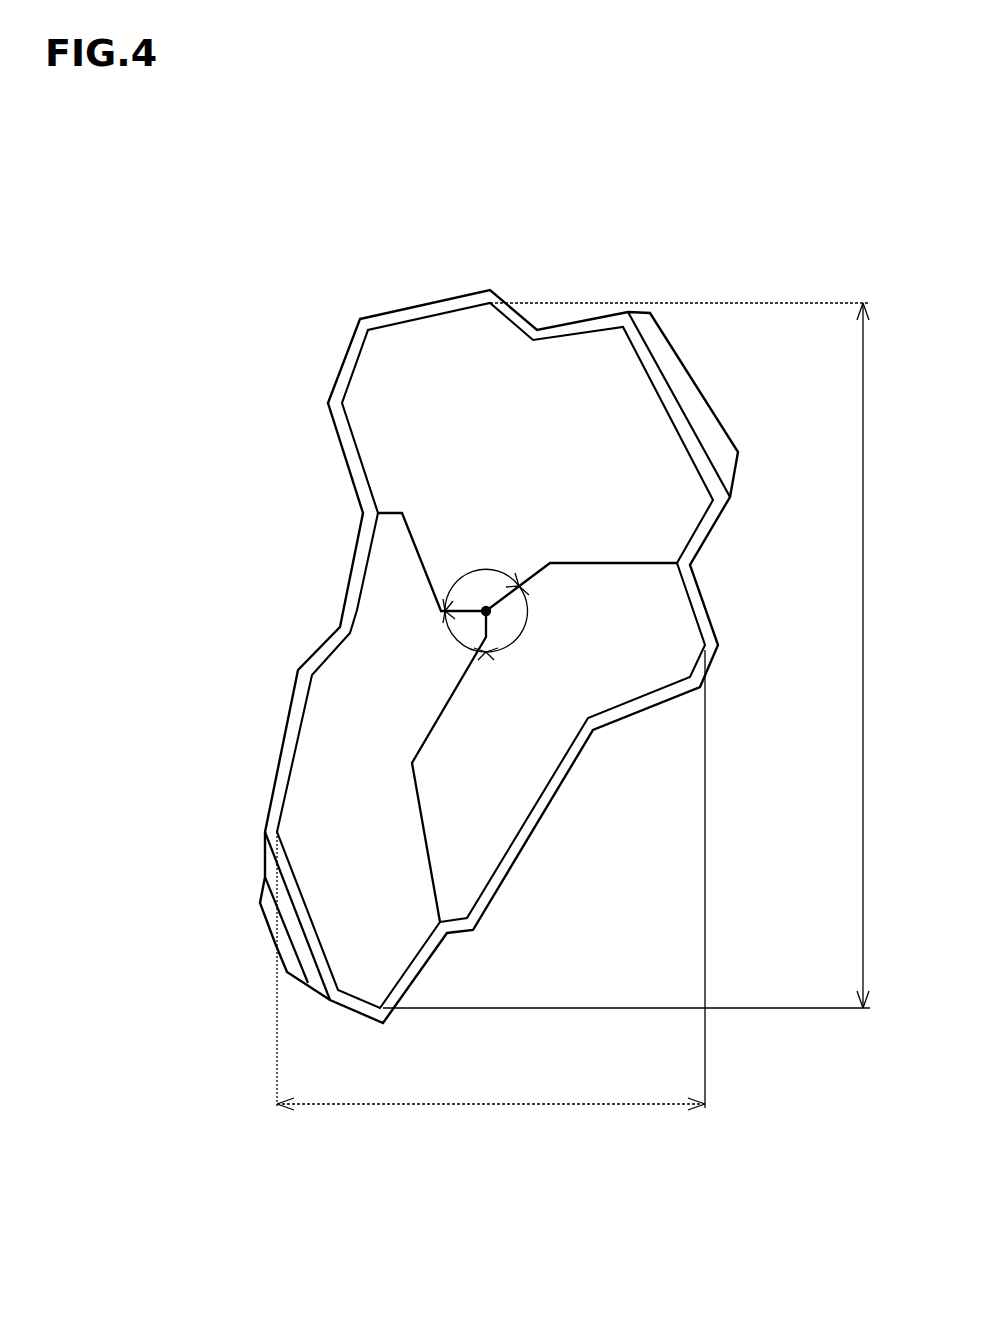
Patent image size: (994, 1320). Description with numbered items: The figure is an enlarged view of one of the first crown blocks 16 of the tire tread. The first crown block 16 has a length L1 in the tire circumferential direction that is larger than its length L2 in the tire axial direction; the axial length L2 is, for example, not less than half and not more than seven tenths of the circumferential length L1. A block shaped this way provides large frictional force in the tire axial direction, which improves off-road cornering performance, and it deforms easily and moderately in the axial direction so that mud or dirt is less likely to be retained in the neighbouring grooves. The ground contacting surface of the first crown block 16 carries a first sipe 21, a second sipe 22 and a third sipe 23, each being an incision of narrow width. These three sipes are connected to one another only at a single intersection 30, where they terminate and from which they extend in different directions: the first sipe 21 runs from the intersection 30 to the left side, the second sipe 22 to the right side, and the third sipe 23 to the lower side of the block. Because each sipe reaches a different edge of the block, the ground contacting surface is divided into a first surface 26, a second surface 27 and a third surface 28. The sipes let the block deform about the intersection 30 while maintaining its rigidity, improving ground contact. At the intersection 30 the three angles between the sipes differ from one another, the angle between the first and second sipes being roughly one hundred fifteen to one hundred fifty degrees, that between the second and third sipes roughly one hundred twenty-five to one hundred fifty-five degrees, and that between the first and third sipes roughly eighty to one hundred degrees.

The first crown block 16 is at (368, 277).
The first sipe 21 is at (420, 563).
The second sipe 22 is at (605, 562).
The third sipe 23 is at (430, 862).
The first surface 26 is at (534, 463).
The second surface 27 is at (371, 780).
The third surface 28 is at (524, 736).
The intersection 30 is at (488, 613).
The length in the tire circumferential direction L1 is at (645, 655).
The length in the tire axial direction L2 is at (491, 895).